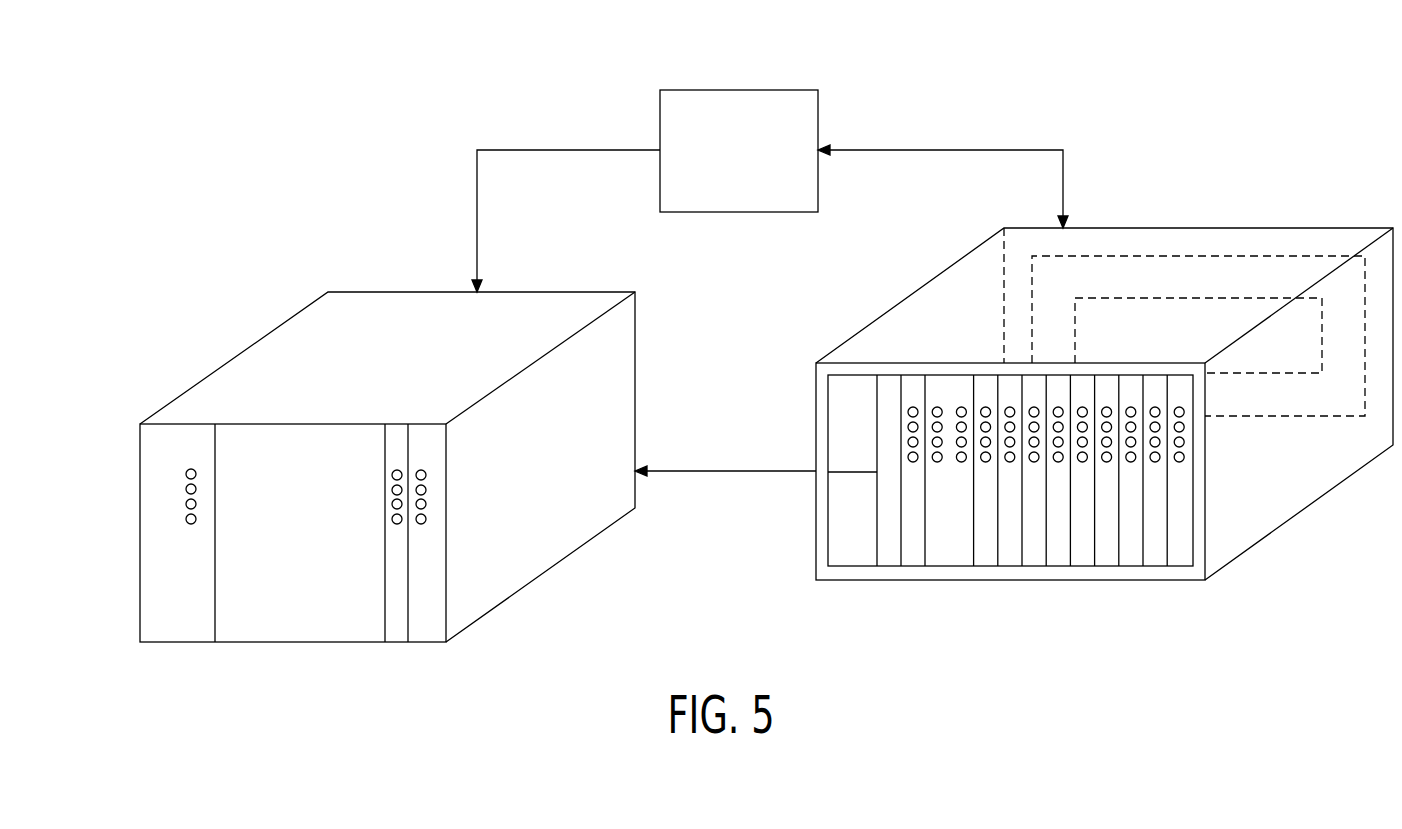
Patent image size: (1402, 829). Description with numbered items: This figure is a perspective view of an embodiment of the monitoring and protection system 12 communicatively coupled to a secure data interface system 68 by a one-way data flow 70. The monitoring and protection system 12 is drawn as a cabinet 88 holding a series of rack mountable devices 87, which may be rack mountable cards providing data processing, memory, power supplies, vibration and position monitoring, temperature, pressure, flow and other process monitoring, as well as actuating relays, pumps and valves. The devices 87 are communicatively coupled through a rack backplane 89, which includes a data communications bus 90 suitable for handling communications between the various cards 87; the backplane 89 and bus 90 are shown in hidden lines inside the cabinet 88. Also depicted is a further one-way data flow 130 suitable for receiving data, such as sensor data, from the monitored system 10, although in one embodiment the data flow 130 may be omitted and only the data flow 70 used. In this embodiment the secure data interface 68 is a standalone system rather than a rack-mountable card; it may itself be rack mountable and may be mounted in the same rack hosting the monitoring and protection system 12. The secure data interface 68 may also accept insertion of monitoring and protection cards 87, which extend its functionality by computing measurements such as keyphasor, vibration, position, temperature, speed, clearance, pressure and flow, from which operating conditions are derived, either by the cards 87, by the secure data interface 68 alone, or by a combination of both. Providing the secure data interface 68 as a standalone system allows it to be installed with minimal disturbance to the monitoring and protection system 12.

The monitored system 10 is at (724, 166).
The monitoring and protection system 12 is at (815, 362).
The secure data interface system 68 is at (140, 424).
The one-way data flow 70 is at (732, 473).
The rack mountable devices 87 is at (423, 612).
The cabinet 88 is at (852, 567).
The rack backplane 89 is at (1198, 256).
The data communications bus 90 is at (1233, 298).
The one-way data flow 130 is at (568, 148).